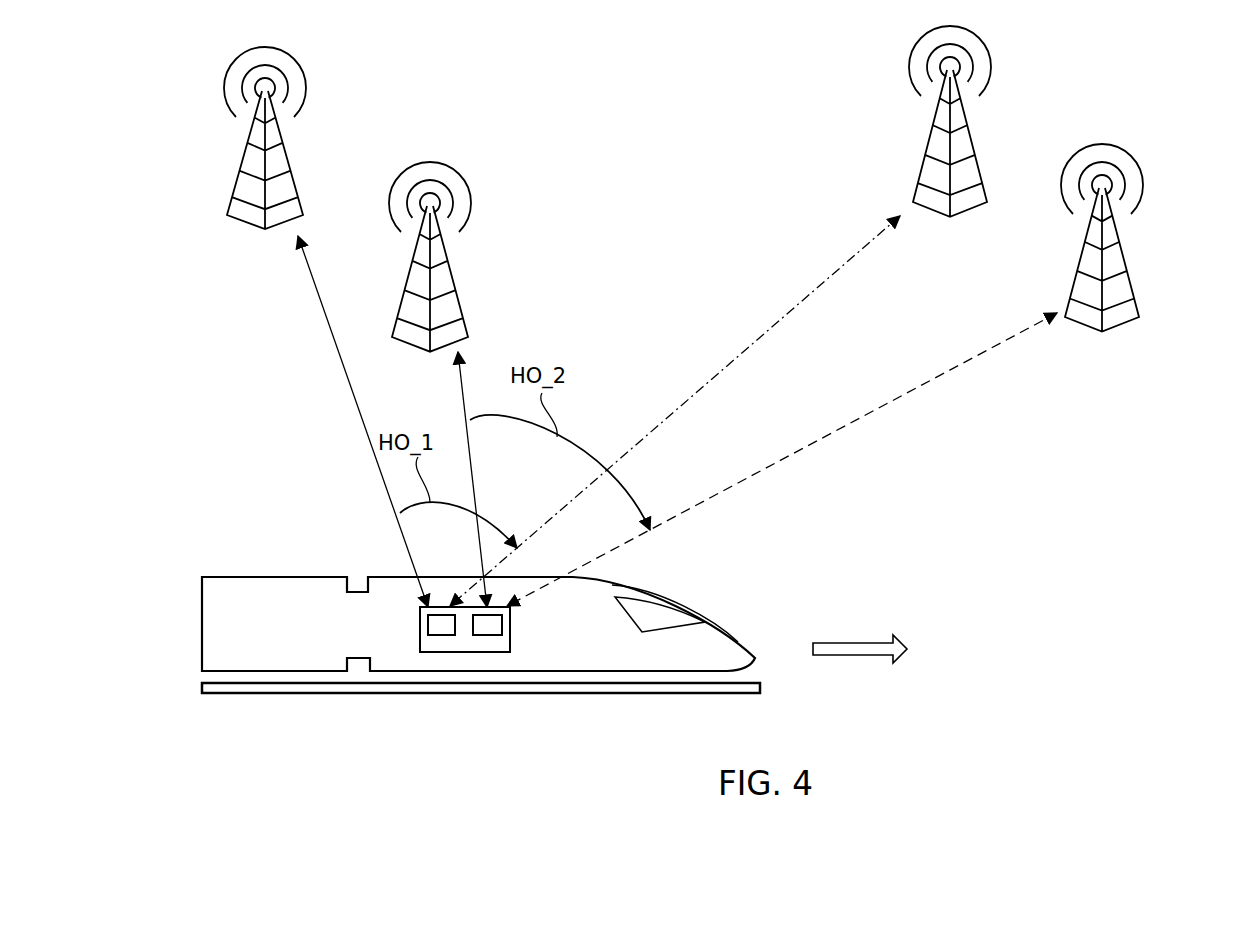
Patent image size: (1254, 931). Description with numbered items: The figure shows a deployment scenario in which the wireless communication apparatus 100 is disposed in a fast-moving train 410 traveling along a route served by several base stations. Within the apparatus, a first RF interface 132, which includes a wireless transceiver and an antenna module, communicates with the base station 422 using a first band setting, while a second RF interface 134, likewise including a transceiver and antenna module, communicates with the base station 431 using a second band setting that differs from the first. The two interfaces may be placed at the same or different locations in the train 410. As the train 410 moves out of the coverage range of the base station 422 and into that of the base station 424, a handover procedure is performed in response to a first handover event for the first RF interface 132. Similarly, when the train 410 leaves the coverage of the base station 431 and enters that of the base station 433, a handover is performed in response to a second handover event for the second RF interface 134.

The wireless communication apparatus 100 is at (415, 686).
The first RF interface 132 is at (445, 637).
The second RF interface 134 is at (494, 637).
The train 410 is at (737, 638).
The base station 422 is at (285, 158).
The base station 424 is at (978, 148).
The base station 431 is at (462, 284).
The base station 433 is at (1128, 263).